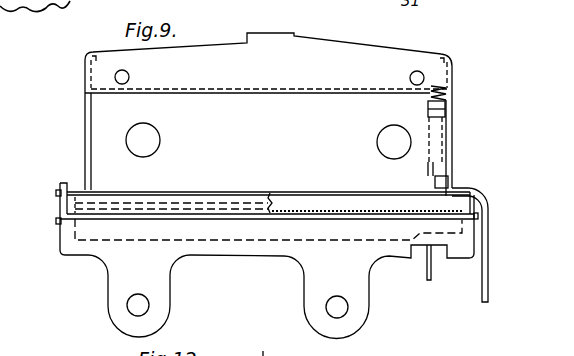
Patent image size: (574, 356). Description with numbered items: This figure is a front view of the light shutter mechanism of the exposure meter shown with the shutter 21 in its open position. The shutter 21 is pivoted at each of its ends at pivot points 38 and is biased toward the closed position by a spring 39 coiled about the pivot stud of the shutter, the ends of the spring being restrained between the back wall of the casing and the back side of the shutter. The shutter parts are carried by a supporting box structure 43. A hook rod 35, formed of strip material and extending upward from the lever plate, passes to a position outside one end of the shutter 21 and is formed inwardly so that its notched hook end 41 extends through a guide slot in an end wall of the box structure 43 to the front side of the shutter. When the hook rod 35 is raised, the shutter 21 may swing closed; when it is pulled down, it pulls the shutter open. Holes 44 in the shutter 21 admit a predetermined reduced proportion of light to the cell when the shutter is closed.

The shutter 21 is at (103, 133).
The hook rod 35 is at (482, 281).
The pivot points 38 is at (85, 95).
The spring 39 is at (431, 95).
The hook end 41 is at (435, 180).
The supporting box structure 43 is at (451, 134).
The holes 44 is at (152, 130).